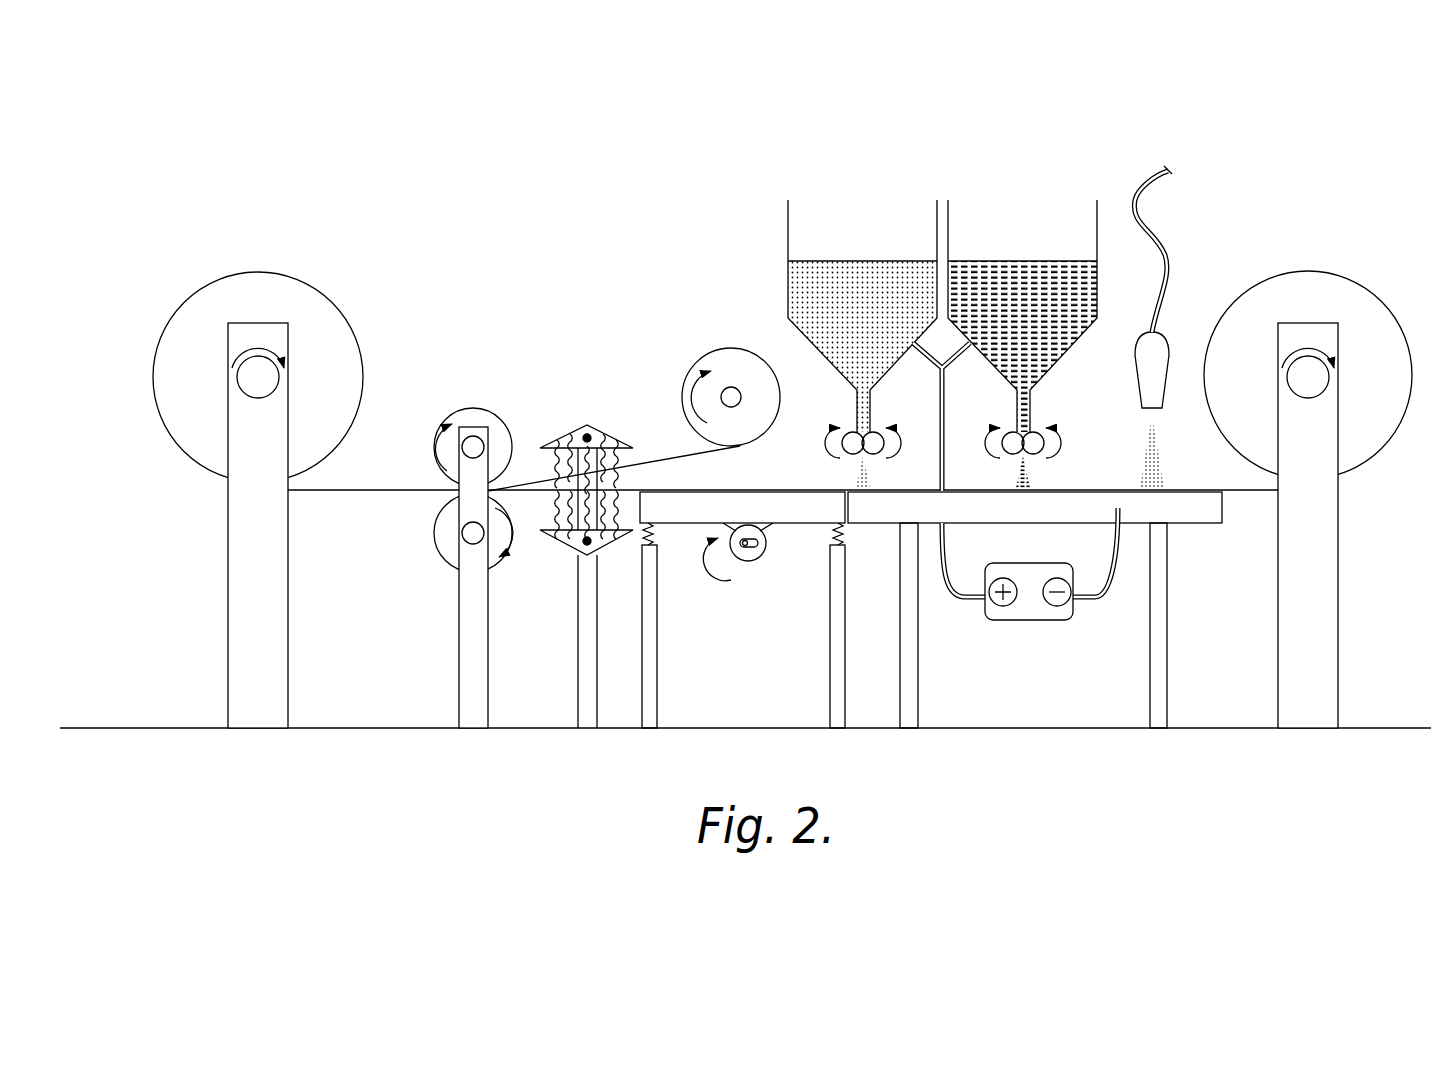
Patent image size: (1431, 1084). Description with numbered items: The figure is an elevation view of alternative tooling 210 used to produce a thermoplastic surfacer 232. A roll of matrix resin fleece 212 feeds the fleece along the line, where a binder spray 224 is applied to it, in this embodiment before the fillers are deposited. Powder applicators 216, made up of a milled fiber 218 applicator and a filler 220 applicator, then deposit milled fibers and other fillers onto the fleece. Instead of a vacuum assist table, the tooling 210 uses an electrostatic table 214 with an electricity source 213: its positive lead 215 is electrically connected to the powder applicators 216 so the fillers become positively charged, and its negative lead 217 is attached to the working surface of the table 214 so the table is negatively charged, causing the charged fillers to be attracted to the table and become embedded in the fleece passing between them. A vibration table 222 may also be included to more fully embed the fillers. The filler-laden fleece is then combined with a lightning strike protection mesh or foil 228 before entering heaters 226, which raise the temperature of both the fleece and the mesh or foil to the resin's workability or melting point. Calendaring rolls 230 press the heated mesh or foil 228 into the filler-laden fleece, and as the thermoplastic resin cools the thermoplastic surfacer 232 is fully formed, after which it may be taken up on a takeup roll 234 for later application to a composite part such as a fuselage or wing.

The tooling 210 is at (362, 106).
The roll of matrix resin fleece 212 is at (1333, 283).
The electricity source 213 is at (1034, 618).
The electrostatic table 214 is at (1192, 510).
The positive lead 215 is at (958, 600).
The powder applicators 216 is at (1060, 160).
The negative lead 217 is at (1105, 600).
The milled fiber applicator 218 is at (998, 272).
The filler applicator 220 is at (836, 272).
The vibration table 222 is at (787, 510).
The binder spray 224 is at (1157, 345).
The heaters 226 is at (592, 430).
The lightning strike protection mesh or foil 228 is at (727, 350).
The calendaring rolls 230 is at (406, 506).
The thermoplastic surfacer 232 is at (365, 488).
The takeup roll 234 is at (207, 303).